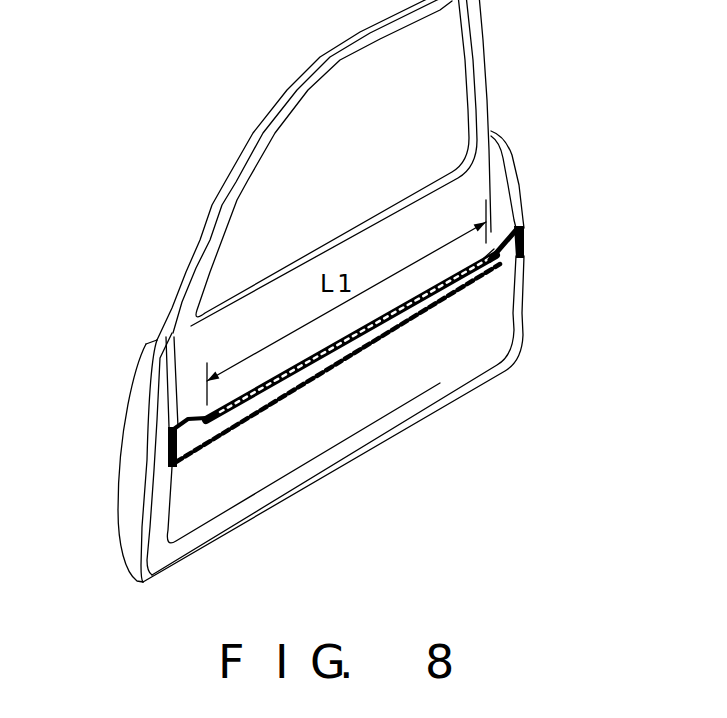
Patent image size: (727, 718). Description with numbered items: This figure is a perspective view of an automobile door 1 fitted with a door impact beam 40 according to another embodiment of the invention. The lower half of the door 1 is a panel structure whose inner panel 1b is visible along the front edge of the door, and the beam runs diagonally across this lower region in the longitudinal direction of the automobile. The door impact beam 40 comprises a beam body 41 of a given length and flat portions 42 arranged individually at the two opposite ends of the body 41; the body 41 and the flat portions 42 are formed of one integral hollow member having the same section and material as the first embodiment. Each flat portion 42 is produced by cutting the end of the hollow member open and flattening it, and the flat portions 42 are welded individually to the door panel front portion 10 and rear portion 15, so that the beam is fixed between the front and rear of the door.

The door 1 is at (208, 151).
The inner panel 1b is at (124, 430).
The door panel front portion 10 is at (523, 231).
The door panel rear portion 15 is at (166, 503).
The door impact beam 40 is at (380, 350).
The beam body 41 is at (293, 385).
The flat portions 42 is at (192, 442).